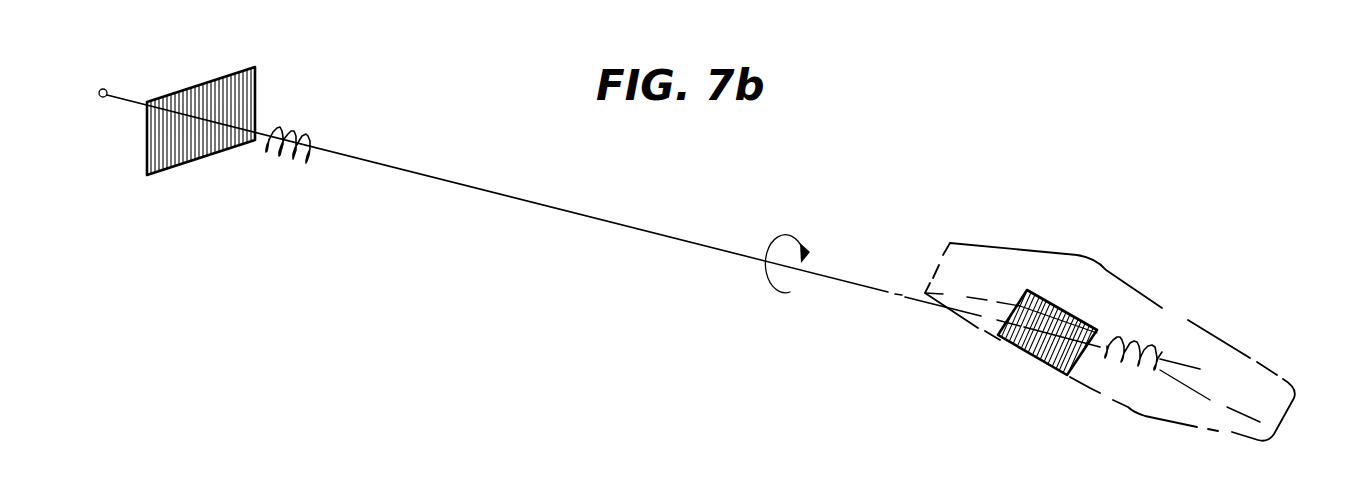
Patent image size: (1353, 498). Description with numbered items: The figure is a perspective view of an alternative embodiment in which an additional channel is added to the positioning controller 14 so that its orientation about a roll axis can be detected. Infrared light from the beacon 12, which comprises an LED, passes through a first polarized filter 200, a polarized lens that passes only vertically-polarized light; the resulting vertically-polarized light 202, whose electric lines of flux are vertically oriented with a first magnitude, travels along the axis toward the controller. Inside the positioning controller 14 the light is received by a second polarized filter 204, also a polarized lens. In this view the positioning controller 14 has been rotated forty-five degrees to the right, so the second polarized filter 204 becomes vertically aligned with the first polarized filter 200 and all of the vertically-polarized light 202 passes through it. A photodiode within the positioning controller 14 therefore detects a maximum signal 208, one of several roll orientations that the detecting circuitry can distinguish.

The beacon 12 is at (101, 98).
The positioning controller 14 is at (1030, 260).
The first polarized filter 200 is at (197, 160).
The vertically-polarized light 202 is at (305, 131).
The second polarized filter 204 is at (1023, 355).
The maximum signal 208 is at (1148, 340).